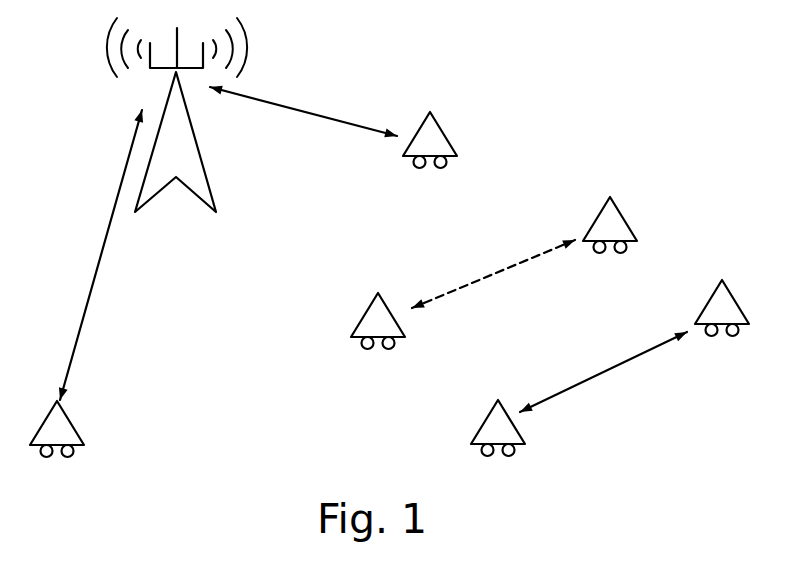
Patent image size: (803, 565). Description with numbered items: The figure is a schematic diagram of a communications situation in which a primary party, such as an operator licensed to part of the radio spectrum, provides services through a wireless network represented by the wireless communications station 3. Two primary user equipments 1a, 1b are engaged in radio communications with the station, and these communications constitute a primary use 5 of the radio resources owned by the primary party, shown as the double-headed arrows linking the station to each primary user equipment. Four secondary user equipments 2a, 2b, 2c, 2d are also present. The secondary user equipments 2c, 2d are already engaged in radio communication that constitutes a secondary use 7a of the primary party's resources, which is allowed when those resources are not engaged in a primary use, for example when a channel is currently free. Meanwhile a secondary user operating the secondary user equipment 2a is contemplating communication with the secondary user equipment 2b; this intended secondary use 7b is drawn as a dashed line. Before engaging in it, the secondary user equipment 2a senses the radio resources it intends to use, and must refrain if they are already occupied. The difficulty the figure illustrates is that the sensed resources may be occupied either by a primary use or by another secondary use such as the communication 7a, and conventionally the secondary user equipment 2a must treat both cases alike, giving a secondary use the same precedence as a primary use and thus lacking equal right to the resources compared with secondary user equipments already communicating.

The primary user equipment 1a is at (76, 422).
The primary user equipment 1b is at (450, 137).
The secondary user equipment 2a is at (362, 318).
The secondary user equipment 2b is at (627, 218).
The secondary user equipment 2c is at (522, 433).
The secondary user equipment 2d is at (710, 297).
The wireless communications station 3 is at (200, 202).
The primary use 5 is at (88, 300).
The secondary use 7a is at (640, 360).
The intended secondary use 7b is at (517, 265).